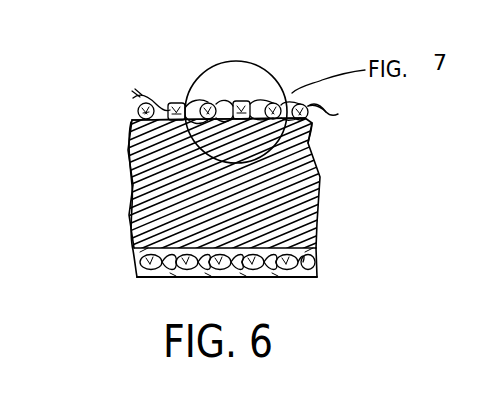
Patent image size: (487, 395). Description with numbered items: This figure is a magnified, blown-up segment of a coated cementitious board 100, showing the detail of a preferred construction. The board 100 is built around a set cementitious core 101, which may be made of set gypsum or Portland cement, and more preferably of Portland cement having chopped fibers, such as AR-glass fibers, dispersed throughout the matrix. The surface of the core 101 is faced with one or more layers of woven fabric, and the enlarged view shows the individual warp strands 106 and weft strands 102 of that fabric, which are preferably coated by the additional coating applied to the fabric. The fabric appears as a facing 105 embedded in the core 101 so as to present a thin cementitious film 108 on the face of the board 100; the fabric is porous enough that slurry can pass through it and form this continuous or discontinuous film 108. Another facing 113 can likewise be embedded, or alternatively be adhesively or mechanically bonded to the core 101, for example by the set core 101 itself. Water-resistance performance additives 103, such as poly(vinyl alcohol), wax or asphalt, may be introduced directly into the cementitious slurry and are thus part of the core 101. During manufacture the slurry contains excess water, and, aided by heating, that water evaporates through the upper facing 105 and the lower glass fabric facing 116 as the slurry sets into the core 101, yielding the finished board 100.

The cementitious board 100 is at (297, 57).
The set cementitious core 101 is at (320, 222).
The weft strands 102 is at (313, 118).
The performance additive 103 is at (133, 185).
The facing 105 is at (320, 265).
The warp strands 106 is at (313, 117).
The cementitious film 108 is at (170, 278).
The facing 113 is at (232, 90).
The lower glass fabric facing 116 is at (132, 98).